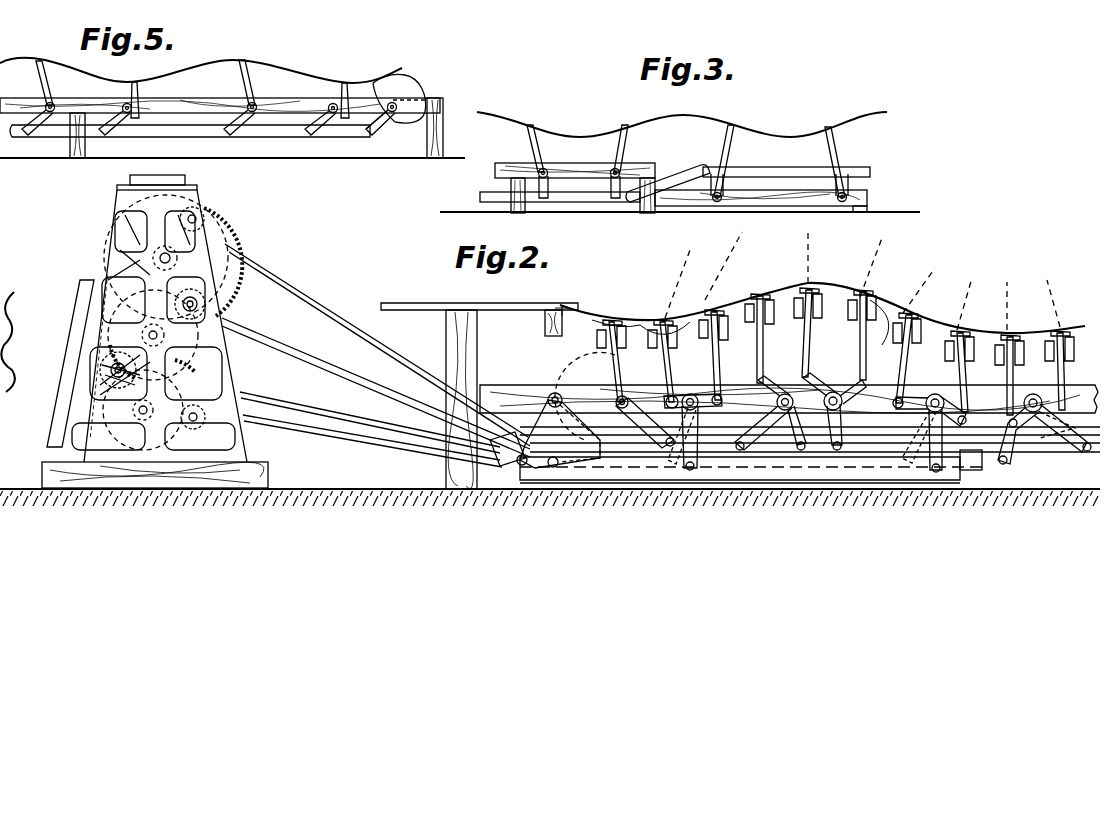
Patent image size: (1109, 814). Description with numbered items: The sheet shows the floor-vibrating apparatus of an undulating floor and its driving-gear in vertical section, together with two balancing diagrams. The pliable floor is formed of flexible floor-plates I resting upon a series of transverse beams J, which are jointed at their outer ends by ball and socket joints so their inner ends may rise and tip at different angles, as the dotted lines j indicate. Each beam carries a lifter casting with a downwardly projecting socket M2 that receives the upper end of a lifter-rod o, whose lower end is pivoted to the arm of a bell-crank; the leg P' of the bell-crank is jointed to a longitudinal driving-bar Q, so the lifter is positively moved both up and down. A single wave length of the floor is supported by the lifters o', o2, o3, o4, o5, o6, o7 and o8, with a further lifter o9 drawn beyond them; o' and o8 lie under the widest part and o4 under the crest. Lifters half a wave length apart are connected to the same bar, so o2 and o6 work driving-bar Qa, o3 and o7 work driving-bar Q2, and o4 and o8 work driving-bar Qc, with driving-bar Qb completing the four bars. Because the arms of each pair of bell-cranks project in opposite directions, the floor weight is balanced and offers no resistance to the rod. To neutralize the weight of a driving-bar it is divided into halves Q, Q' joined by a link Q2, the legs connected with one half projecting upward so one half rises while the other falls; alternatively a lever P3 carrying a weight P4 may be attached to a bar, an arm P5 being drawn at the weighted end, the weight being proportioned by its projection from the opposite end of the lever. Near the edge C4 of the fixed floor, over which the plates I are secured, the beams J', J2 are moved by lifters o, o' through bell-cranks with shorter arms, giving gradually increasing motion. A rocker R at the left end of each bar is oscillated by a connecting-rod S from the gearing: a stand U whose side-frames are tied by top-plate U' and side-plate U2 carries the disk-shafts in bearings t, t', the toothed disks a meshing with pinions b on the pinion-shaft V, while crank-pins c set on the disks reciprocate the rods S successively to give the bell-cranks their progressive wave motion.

In FIG. 5, the floor-plates I is at (300, 72).
In FIG. 3, the floor-plates I is at (850, 115).
In FIG. 2, the floor-plates I is at (835, 285).
In FIG. 5, the pivot pin f is at (74, 100).
In FIG. 3, the pivot pin f is at (570, 165).
In FIG. 5, the lifter o' is at (101, 89).
In FIG. 2, the lifter o' is at (670, 361).
In FIG. 5, the lifter o4 is at (246, 80).
In FIG. 2, the lifter o4 is at (810, 343).
In FIG. 5, the driving-bar Q is at (190, 142).
In FIG. 3, the driving-bar Q is at (560, 214).
In FIG. 2, the driving-bar Q is at (752, 507).
In FIG. 5, the weight P4 is at (420, 80).
In FIG. 5, the arm P5 is at (395, 120).
In FIG. 3, the lifter o3 is at (832, 140).
In FIG. 2, the lifter o3 is at (764, 345).
In FIG. 3, the link Q2 is at (665, 180).
In FIG. 3, the driving-bar half Q' is at (762, 175).
In FIG. 2, the top-plate U' is at (137, 177).
In FIG. 2, the stand U is at (155, 339).
In FIG. 2, the side-plate U2 is at (72, 296).
In FIG. 2, the toothed disk a is at (222, 228).
In FIG. 2, the crank-pin c is at (200, 210).
In FIG. 2, the pinion b is at (170, 335).
In FIG. 2, the pinion-shaft V is at (115, 362).
In FIG. 2, the bearing t is at (111, 309).
In FIG. 2, the bearing t' is at (113, 245).
In FIG. 2, the connecting-rod S is at (270, 330).
In FIG. 2, the shelf C' is at (479, 294).
In FIG. 2, the edge of the fixed floor C4 is at (543, 325).
In FIG. 2, the driving-bar Qb is at (1050, 456).
In FIG. 2, the driving-bar Qc is at (865, 485).
In FIG. 2, the driving-bar Qa is at (978, 472).
In FIG. 2, the lifter-rod o is at (621, 361).
In FIG. 2, the lifter o2 is at (718, 357).
In FIG. 2, the lifter o5 is at (866, 355).
In FIG. 2, the lifter o6 is at (905, 373).
In FIG. 2, the lifter o7 is at (963, 367).
In FIG. 2, the lifter o8 is at (1014, 365).
In FIG. 2, the hanger rod o9 is at (1066, 373).
In FIG. 2, the lifter socket M2 is at (1055, 333).
In FIG. 2, the beam J' is at (617, 308).
In FIG. 2, the beam J2 is at (675, 340).
In FIG. 2, the transverse beam J is at (903, 313).
In FIG. 2, the dotted lines j is at (745, 260).
In FIG. 2, the rocker R is at (547, 398).
In FIG. 2, the lever P3 is at (575, 375).
In FIG. 2, the leg of bell-crank P' is at (853, 412).